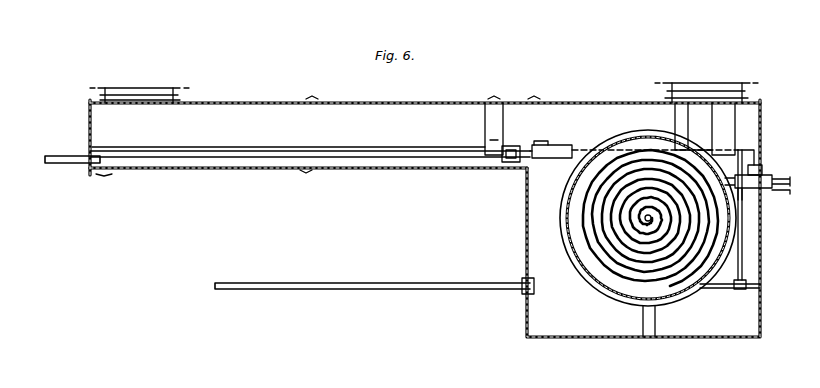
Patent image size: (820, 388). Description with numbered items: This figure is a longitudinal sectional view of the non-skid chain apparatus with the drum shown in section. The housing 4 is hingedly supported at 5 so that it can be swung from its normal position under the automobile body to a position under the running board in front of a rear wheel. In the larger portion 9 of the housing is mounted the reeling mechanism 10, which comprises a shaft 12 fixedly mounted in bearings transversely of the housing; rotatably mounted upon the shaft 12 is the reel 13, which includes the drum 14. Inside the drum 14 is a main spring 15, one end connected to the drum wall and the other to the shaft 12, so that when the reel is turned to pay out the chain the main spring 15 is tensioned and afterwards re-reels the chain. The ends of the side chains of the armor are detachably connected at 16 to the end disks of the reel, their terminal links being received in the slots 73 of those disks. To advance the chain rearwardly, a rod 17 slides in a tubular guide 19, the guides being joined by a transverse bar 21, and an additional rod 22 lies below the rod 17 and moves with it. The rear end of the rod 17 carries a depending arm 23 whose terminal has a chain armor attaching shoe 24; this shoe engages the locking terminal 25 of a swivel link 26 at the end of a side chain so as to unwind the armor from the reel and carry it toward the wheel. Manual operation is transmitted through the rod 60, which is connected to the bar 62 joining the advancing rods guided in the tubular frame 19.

The housing 4 is at (350, 100).
The hinge support 5 is at (135, 96).
The larger portion of the housing 9 is at (524, 231).
The reeling mechanism 10 is at (745, 230).
The shaft 12 is at (645, 220).
The reel 13 is at (612, 284).
The drum 14 is at (698, 292).
The main spring 15 is at (668, 300).
The detachable connection 16 is at (746, 200).
The rod 17 is at (582, 145).
The tubular guide 19 is at (390, 147).
The transverse bar 21 is at (541, 140).
The additional rod 22 is at (333, 280).
The depending arm 23 is at (755, 156).
The chain armor attaching shoe 24 is at (762, 170).
The locking terminal 25 is at (780, 180).
The swivel link 26 is at (776, 192).
The rod 60 is at (60, 165).
The bar 62 is at (512, 166).
The slot 73 is at (712, 172).